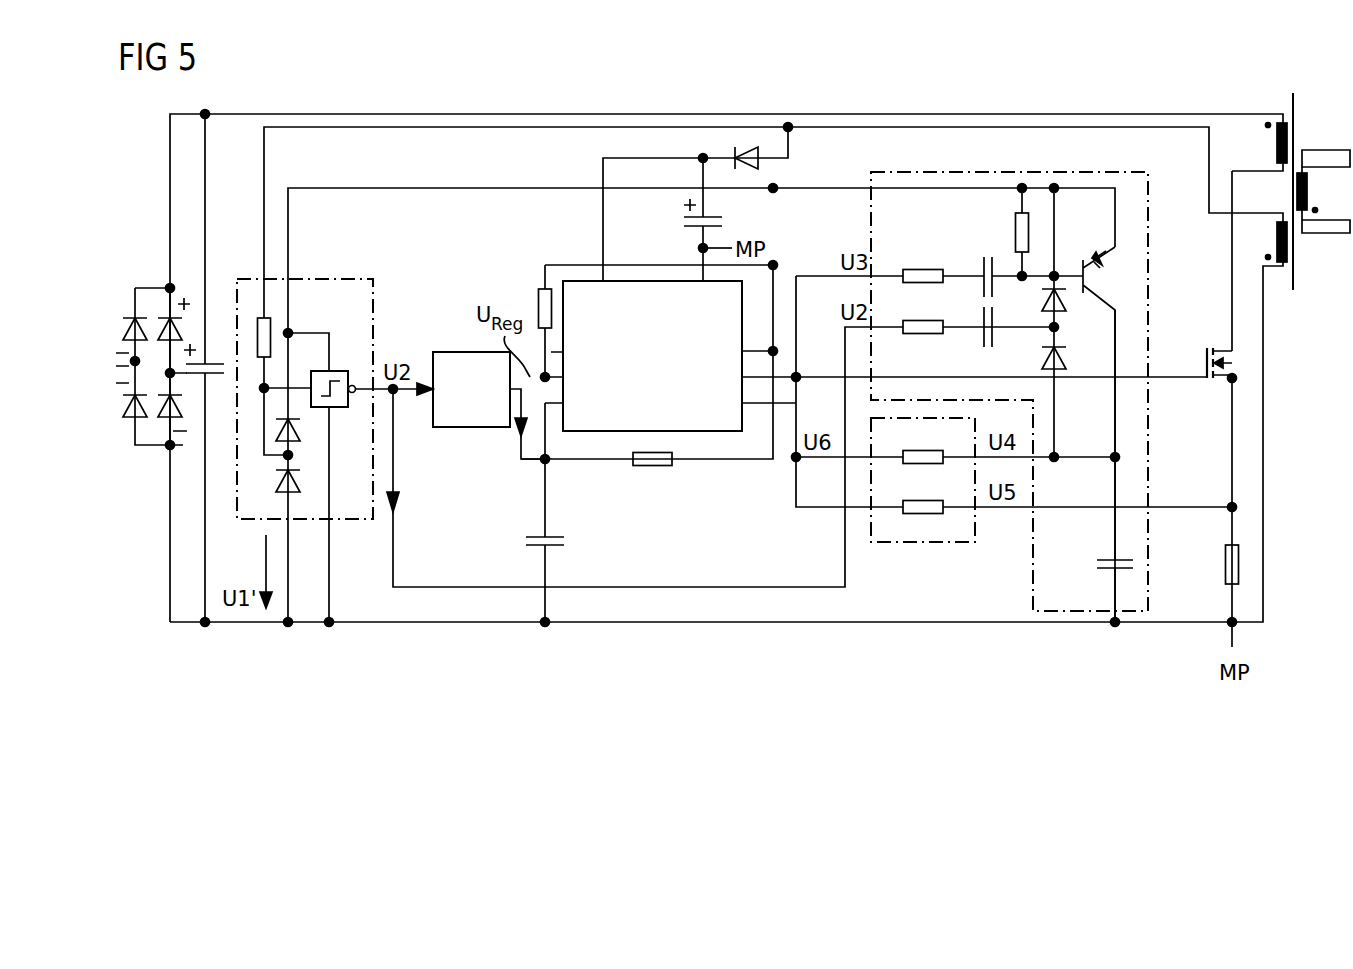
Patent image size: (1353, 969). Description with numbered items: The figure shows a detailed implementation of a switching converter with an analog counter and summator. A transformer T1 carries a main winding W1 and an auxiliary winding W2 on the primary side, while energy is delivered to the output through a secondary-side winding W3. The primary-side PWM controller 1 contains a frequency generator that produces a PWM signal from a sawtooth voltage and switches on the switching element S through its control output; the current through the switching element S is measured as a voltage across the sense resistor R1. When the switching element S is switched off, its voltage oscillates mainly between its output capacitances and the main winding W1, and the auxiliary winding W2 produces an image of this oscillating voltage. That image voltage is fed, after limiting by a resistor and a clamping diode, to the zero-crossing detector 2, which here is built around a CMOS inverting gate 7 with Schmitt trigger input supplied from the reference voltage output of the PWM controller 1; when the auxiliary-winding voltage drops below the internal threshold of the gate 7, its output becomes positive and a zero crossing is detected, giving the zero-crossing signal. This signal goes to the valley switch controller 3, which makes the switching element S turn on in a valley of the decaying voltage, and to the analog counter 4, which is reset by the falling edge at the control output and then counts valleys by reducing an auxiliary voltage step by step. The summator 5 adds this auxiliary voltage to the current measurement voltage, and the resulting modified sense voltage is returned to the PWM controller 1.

The PWM controller 1 is at (651, 281).
The zero-crossing detector 2 is at (335, 280).
The valley switch controller 3 is at (472, 352).
The analog counter 4 is at (1150, 411).
The summator 5 is at (935, 545).
The CMOS inverting gate with Schmitt trigger input 7 is at (337, 371).
The switching element S is at (1222, 348).
The current sense resistor R1 is at (1225, 565).
The transformer T1 is at (1292, 177).
The main winding W1 is at (1259, 147).
The auxiliary winding W2 is at (1266, 242).
The secondary-side winding W3 is at (1325, 191).